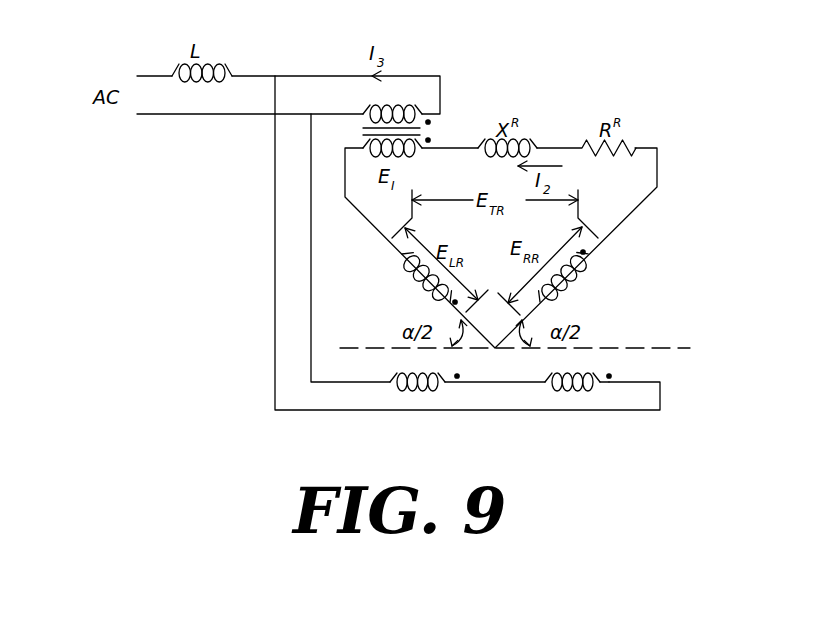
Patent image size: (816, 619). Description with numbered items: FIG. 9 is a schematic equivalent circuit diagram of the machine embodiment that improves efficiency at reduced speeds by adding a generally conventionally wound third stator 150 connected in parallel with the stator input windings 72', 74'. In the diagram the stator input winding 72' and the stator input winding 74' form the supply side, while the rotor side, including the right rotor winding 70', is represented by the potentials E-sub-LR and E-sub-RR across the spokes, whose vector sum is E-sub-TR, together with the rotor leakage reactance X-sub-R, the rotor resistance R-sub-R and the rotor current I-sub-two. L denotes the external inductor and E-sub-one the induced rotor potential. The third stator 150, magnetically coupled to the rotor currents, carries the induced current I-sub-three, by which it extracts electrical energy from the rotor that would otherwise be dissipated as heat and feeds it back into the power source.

The third stator 150 is at (412, 109).
The right rotor winding 70' is at (580, 278).
The stator input winding 72' is at (415, 409).
The stator input winding 74' is at (572, 409).